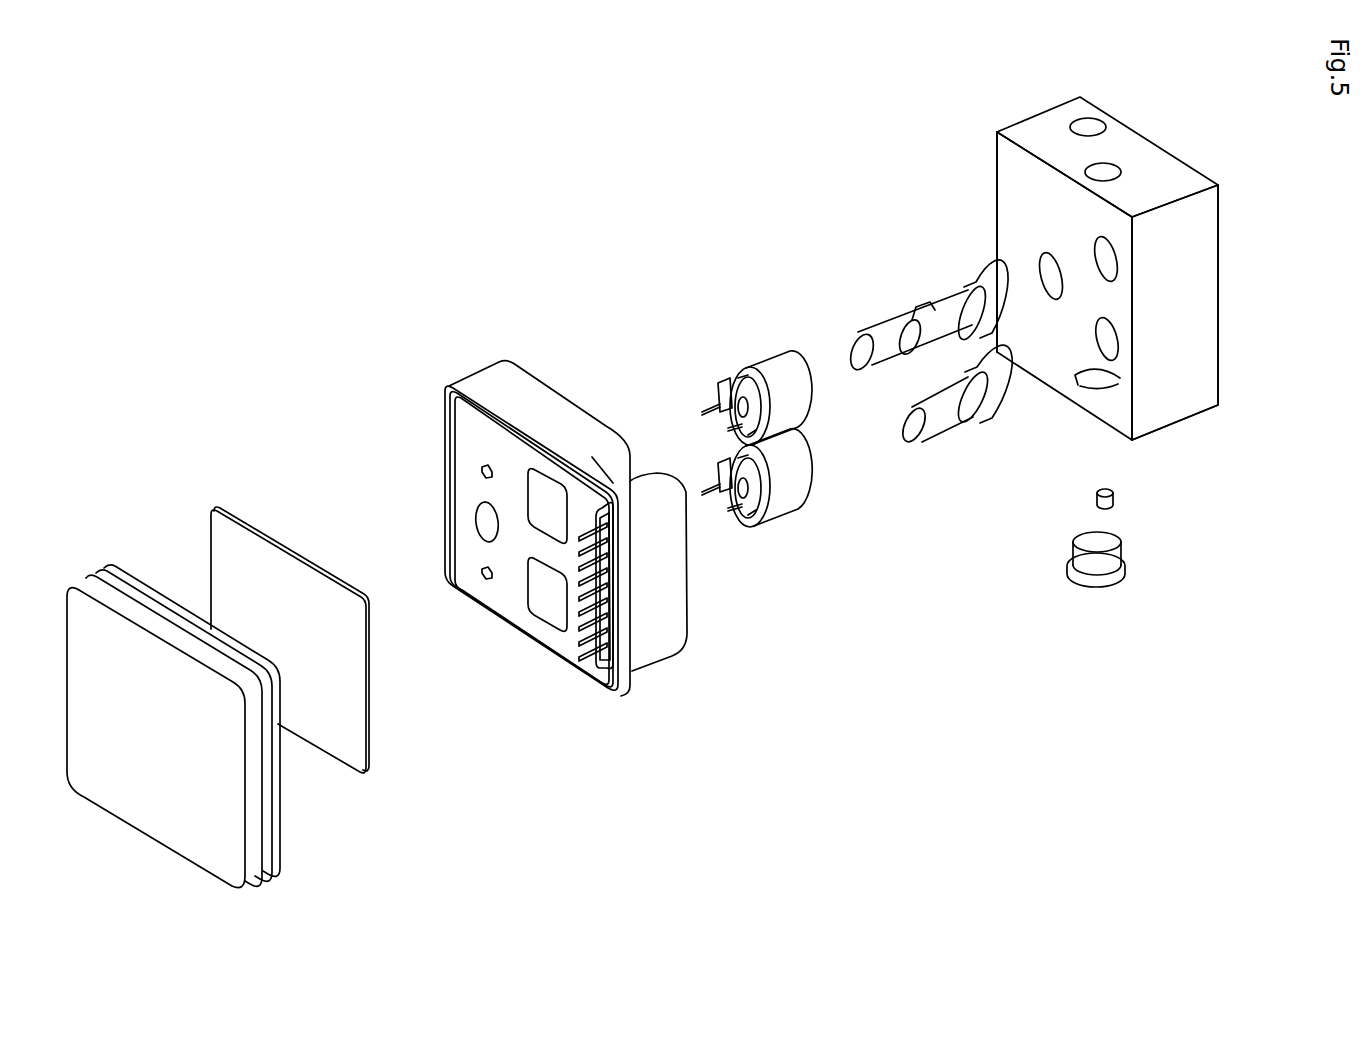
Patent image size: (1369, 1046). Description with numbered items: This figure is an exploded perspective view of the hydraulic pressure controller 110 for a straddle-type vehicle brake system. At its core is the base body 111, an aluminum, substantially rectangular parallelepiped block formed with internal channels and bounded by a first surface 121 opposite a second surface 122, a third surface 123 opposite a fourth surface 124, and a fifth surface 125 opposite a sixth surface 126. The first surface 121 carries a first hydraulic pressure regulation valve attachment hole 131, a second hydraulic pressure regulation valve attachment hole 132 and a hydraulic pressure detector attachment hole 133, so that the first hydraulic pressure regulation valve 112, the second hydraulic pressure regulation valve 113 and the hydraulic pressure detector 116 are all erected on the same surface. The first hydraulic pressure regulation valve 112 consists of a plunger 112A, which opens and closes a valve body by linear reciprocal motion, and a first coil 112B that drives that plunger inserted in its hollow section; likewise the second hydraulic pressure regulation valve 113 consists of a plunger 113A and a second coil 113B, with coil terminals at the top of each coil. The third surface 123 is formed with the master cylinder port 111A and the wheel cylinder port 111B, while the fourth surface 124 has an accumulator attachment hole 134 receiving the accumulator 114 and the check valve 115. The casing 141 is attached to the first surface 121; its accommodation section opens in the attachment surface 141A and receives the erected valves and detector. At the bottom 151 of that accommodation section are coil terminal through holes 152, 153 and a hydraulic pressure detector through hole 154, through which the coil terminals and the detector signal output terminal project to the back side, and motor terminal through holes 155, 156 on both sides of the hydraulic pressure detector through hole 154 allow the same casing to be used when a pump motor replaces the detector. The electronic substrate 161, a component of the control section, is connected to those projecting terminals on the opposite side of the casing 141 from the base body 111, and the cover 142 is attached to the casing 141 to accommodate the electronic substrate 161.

The hydraulic pressure controller 110 is at (258, 254).
The base body 111 is at (1203, 245).
The master cylinder port 111A is at (1088, 122).
The wheel cylinder port 111B is at (1113, 167).
The first hydraulic pressure regulation valve 112 is at (750, 288).
The plunger 112A is at (895, 330).
The first coil 112B is at (768, 367).
The second hydraulic pressure regulation valve 113 is at (910, 549).
The plunger 113A is at (910, 432).
The second coil 113B is at (790, 500).
The accumulator 114 is at (1113, 588).
The check valve 115 is at (1107, 505).
The hydraulic pressure detector 116 is at (900, 333).
The first surface 121 is at (1007, 155).
The second surface 122 is at (1217, 370).
The third surface 123 is at (1190, 184).
The fourth surface 124 is at (1173, 427).
The fifth surface 125 is at (997, 196).
The sixth surface 126 is at (1197, 307).
The first hydraulic pressure regulation valve attachment hole 131 is at (1097, 242).
The second hydraulic pressure regulation valve attachment hole 132 is at (1100, 352).
The hydraulic pressure detector attachment hole 133 is at (1038, 275).
The accumulator attachment hole 134 is at (1107, 387).
The casing 141 is at (501, 393).
The attachment surface 141A is at (561, 398).
The cover 142 is at (140, 643).
The bottom 151 is at (513, 460).
The coil terminal through hole 152 is at (530, 503).
The coil terminal through hole 153 is at (543, 620).
The hydraulic pressure detector through hole 154 is at (477, 522).
The motor terminal through hole 155 is at (483, 467).
The motor terminal through hole 156 is at (481, 574).
The electronic substrate 161 is at (253, 563).